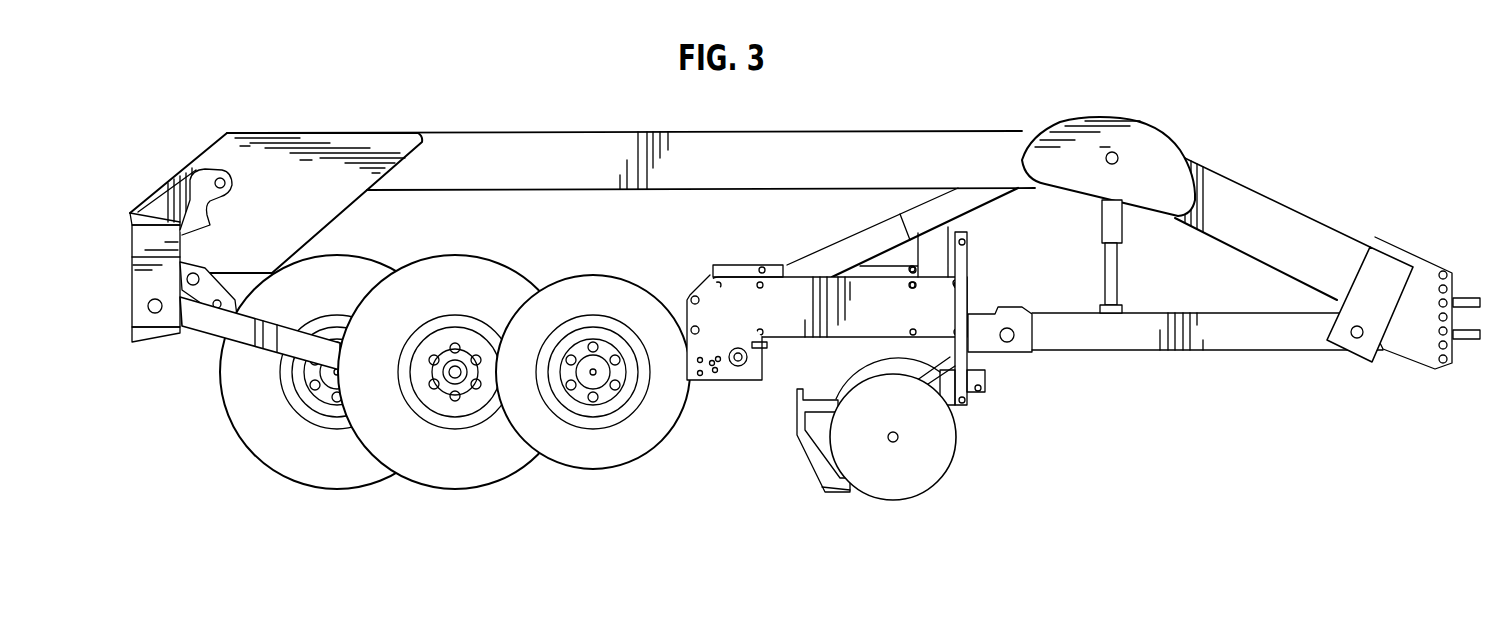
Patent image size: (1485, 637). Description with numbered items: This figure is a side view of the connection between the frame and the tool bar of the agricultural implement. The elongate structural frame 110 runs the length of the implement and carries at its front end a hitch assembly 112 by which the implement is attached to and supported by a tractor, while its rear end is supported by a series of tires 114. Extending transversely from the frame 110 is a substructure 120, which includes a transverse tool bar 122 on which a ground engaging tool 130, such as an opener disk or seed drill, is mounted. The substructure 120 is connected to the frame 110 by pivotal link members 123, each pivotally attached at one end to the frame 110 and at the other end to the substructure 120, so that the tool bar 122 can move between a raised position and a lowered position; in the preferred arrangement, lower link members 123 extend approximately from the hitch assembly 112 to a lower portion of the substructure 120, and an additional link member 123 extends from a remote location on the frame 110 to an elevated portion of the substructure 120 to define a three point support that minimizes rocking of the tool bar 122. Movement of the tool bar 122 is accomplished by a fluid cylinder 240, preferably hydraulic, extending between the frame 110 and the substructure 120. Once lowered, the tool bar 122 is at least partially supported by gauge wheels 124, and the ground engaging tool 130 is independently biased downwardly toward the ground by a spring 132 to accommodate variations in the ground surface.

The frame 110 is at (891, 133).
The hitch assembly 112 is at (1467, 293).
The tires 114 is at (343, 473).
The substructure 120 is at (1014, 432).
The transverse tool bar 122 is at (770, 258).
The link member 123 is at (1220, 338).
The gauge wheels 124 is at (620, 453).
The ground engaging tool 130 is at (940, 461).
The spring 132 is at (967, 358).
The fluid cylinder 240 is at (1122, 272).